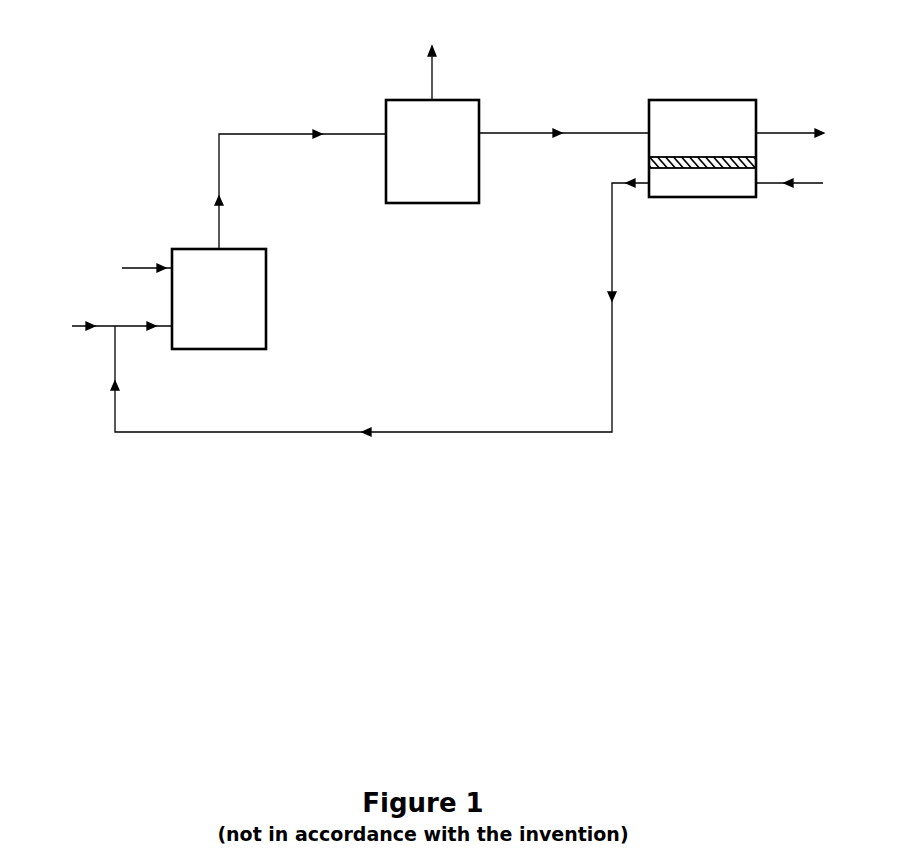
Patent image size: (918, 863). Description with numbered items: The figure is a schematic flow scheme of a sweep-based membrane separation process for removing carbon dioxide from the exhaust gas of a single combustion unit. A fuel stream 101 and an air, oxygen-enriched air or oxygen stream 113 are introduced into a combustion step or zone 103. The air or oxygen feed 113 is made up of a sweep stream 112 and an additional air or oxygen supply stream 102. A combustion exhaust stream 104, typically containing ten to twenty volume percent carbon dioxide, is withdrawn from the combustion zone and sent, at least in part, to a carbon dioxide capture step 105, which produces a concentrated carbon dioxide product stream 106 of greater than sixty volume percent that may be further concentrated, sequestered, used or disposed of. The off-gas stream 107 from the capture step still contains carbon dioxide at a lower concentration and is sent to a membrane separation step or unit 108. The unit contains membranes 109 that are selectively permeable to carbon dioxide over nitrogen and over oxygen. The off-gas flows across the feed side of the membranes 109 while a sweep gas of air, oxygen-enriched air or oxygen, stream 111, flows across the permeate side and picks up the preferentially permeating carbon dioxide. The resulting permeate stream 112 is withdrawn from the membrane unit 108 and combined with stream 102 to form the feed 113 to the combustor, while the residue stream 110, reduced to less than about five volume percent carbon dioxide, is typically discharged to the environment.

The fuel stream 101 is at (125, 269).
The additional air or oxygen supply stream 102 is at (72, 327).
The combustion step or zone 103 is at (266, 300).
The combustion exhaust stream 104 is at (300, 177).
The carbon dioxide capture step 105 is at (438, 203).
The concentrated carbon dioxide product stream 106 is at (437, 60).
The off-gas stream 107 is at (564, 121).
The membrane separation step or unit 108 is at (708, 100).
The membranes 109 is at (649, 158).
The residue stream 110 is at (816, 134).
The sweep gas stream 111 is at (816, 184).
The permeate stream 112 is at (380, 323).
The air or oxygen feed stream 113 is at (143, 312).